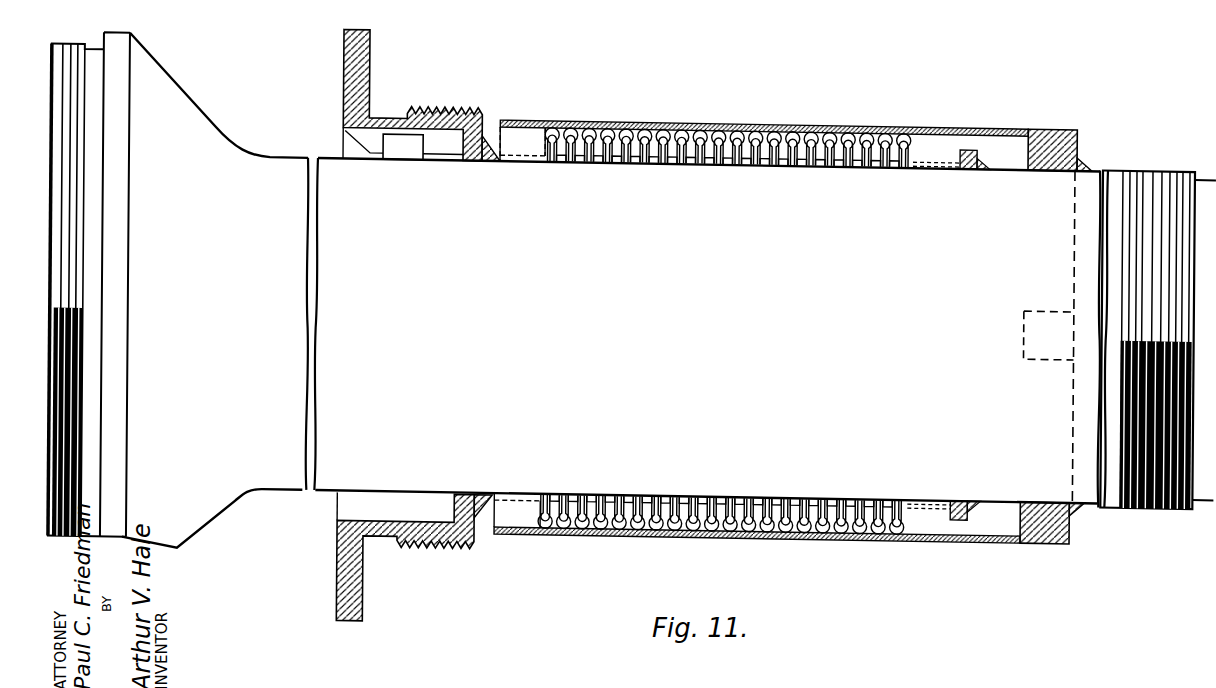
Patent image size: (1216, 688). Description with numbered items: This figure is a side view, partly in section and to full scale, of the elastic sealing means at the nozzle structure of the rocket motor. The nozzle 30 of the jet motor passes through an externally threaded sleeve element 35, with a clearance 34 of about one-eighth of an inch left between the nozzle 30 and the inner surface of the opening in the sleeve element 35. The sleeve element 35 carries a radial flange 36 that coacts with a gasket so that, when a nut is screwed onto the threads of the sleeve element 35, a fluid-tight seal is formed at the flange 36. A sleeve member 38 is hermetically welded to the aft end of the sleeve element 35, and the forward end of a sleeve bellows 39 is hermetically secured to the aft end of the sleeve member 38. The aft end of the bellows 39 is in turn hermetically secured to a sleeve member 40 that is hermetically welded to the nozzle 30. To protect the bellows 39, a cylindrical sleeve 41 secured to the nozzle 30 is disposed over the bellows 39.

The nozzle 30 is at (1093, 160).
The clearance 34 is at (422, 134).
The externally threaded sleeve element 35 is at (377, 537).
The radial flange 36 is at (343, 55).
The sleeve member 38 is at (497, 489).
The sleeve bellows 39 is at (636, 490).
The sleeve member 40 is at (968, 504).
The cylindrical sleeve 41 is at (920, 531).